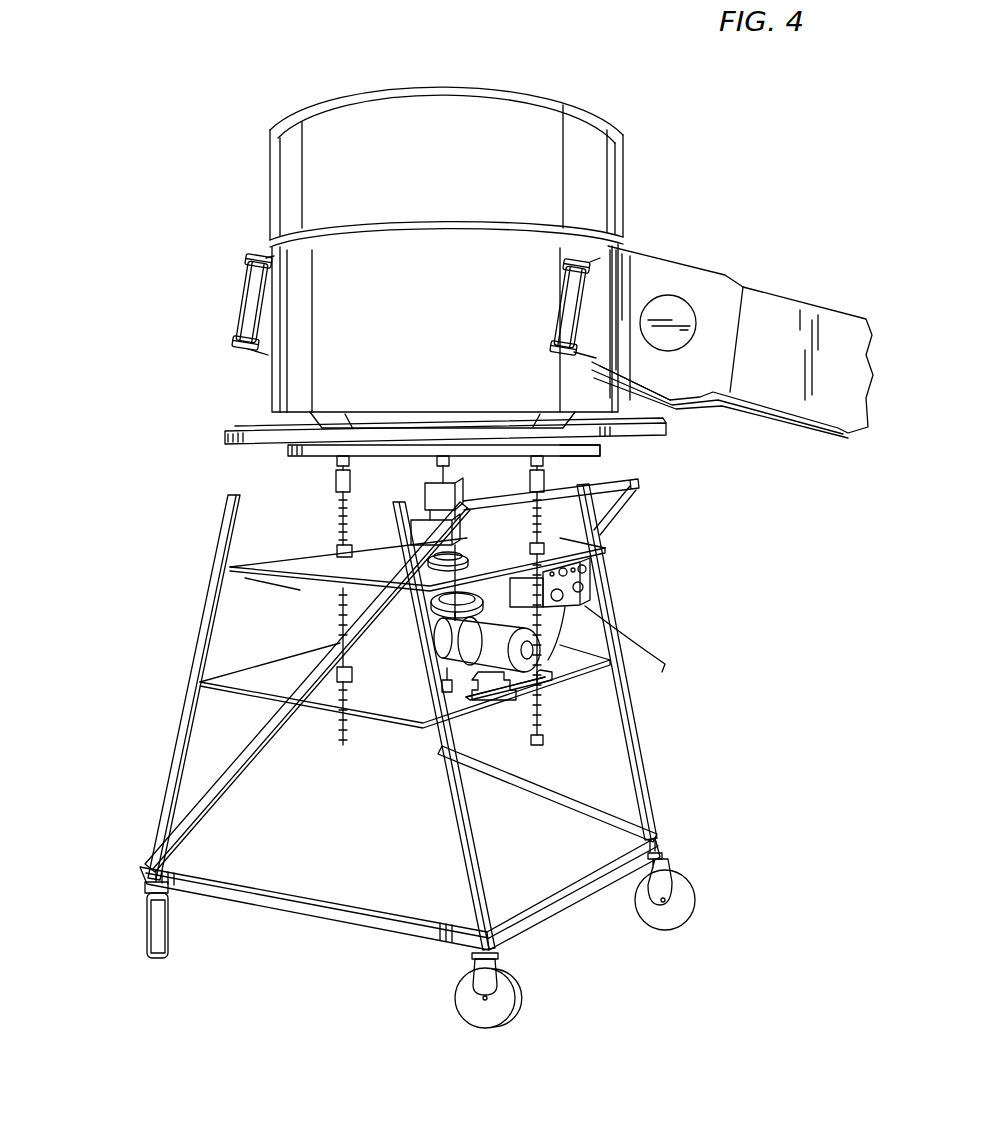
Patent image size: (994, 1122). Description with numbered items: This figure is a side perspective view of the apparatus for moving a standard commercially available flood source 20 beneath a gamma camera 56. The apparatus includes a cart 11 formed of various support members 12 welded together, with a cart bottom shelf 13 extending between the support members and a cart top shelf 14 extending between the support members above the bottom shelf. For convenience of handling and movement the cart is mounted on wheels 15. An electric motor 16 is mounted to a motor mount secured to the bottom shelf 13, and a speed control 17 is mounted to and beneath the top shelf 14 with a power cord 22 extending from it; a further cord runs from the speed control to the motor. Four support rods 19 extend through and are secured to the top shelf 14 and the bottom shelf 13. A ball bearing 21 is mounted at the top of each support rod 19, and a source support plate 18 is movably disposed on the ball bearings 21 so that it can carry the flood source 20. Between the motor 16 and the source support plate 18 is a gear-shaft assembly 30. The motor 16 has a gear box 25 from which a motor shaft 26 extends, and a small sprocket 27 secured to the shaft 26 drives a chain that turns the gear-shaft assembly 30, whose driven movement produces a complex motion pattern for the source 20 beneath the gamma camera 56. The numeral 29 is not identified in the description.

The cart 11 is at (260, 910).
The support members 12 is at (640, 506).
The cart bottom shelf 13 is at (233, 698).
The cart top shelf 14 is at (258, 578).
The wheels 15 is at (683, 912).
The electric motor 16 is at (540, 652).
The speed control 17 is at (590, 590).
The source support plate 18 is at (290, 450).
The support rods 19 is at (338, 515).
The flood source 20 is at (225, 438).
The ball bearing 21 is at (560, 460).
The power cord 22 is at (660, 661).
The gear box 25 is at (445, 640).
The motor shaft 26 is at (347, 631).
The small sprocket 27 is at (487, 692).
The driven pulley 29 is at (477, 597).
The gear-shaft assembly 30 is at (263, 612).
The gamma camera 56 is at (315, 357).